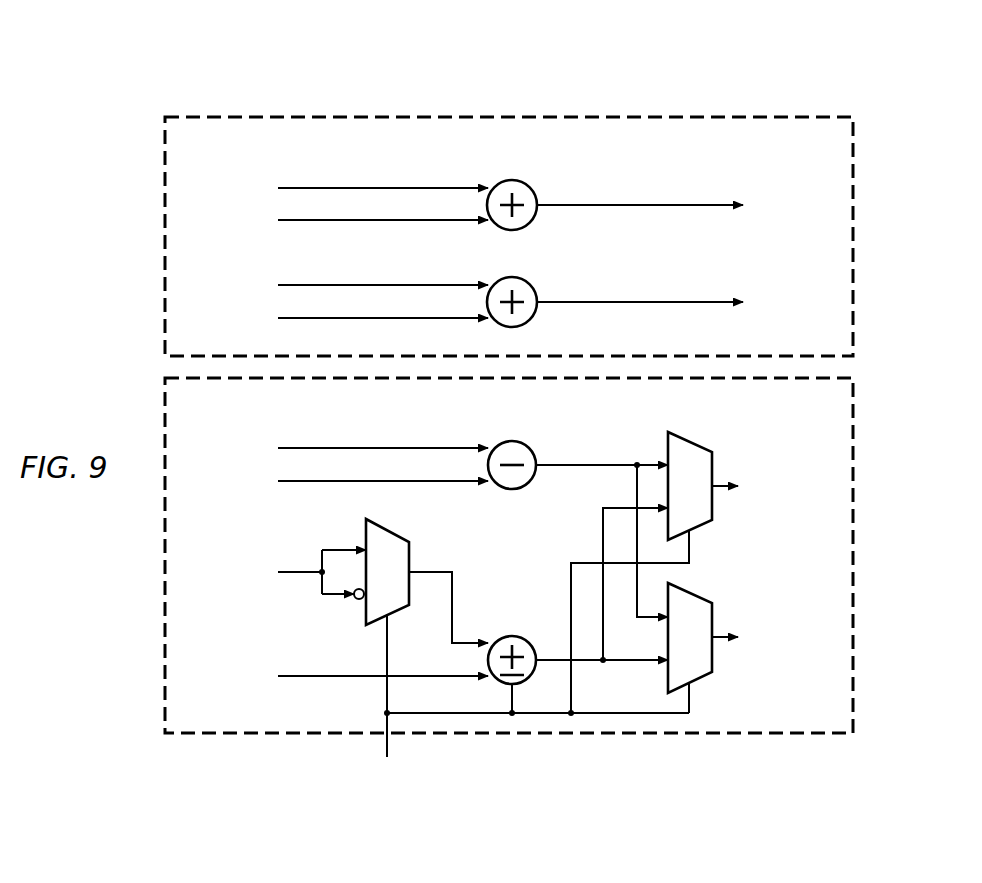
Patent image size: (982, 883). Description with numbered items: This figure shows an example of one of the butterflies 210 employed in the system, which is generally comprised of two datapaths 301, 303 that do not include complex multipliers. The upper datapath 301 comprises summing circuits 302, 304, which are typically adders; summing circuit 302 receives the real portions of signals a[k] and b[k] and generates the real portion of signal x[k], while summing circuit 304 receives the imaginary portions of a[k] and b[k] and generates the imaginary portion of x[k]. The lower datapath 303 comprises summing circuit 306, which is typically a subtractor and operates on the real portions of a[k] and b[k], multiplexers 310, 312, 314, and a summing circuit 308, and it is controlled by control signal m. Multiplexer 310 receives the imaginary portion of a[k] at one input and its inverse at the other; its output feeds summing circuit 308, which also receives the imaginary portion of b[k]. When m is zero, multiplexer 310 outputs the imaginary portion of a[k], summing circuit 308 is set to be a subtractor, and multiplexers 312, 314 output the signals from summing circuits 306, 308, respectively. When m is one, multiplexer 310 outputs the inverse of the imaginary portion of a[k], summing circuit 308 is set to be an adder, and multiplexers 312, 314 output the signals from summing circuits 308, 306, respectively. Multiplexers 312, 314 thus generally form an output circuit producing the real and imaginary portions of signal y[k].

The butterfly 210 is at (443, 100).
The datapath 301 is at (165, 165).
The summing circuit 302 is at (526, 184).
The datapath 303 is at (165, 403).
The summing circuit 304 is at (526, 281).
The summing circuit 306 is at (499, 444).
The summing circuit 308 is at (499, 640).
The multiplexer 310 is at (395, 534).
The multiplexer 312 is at (697, 446).
The multiplexer 314 is at (697, 597).